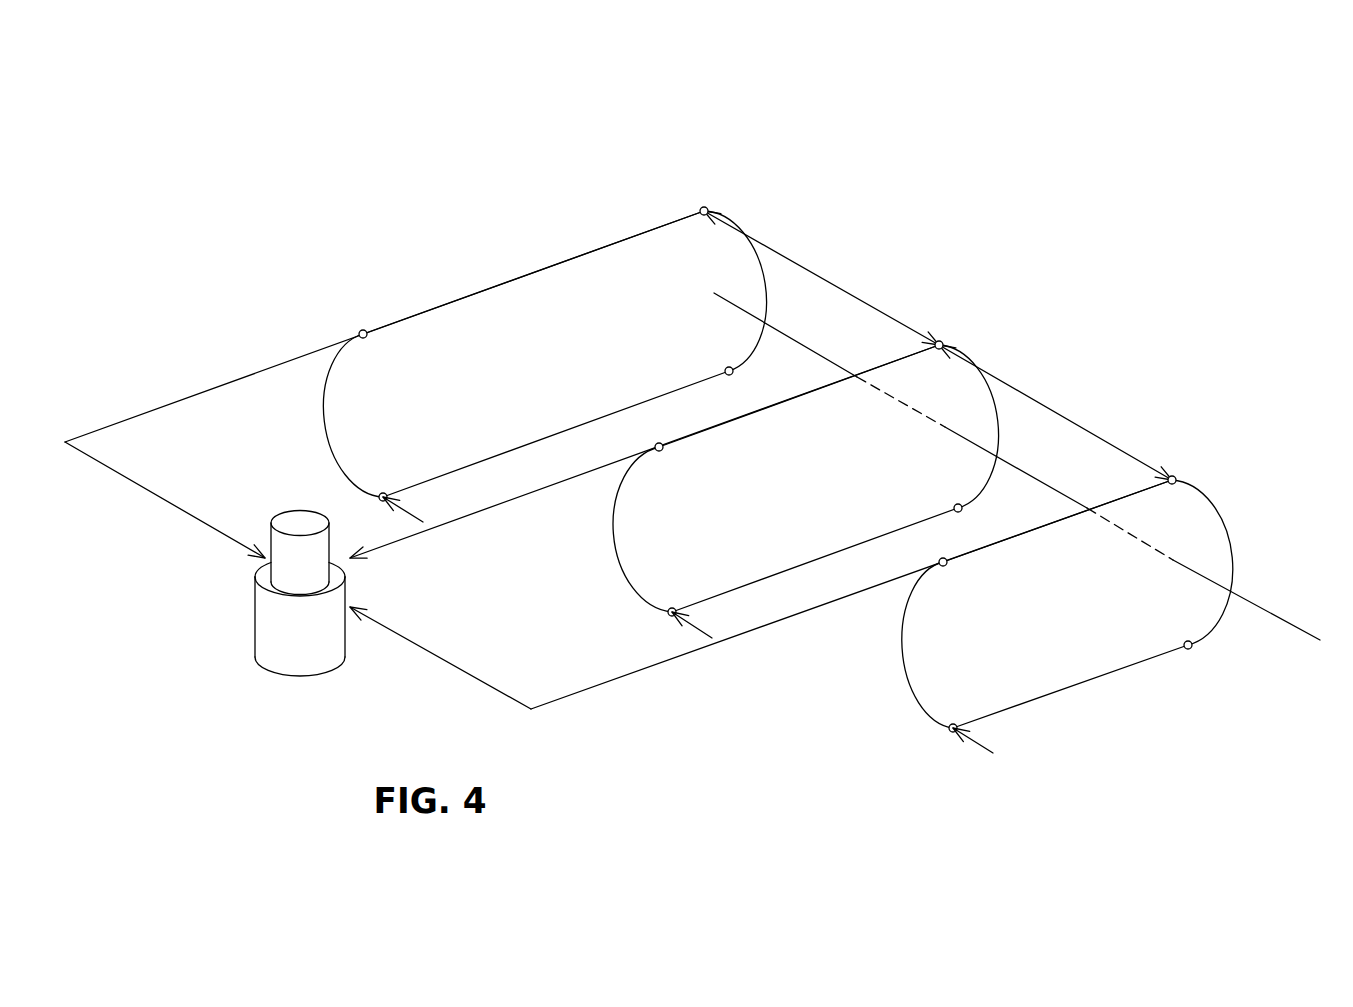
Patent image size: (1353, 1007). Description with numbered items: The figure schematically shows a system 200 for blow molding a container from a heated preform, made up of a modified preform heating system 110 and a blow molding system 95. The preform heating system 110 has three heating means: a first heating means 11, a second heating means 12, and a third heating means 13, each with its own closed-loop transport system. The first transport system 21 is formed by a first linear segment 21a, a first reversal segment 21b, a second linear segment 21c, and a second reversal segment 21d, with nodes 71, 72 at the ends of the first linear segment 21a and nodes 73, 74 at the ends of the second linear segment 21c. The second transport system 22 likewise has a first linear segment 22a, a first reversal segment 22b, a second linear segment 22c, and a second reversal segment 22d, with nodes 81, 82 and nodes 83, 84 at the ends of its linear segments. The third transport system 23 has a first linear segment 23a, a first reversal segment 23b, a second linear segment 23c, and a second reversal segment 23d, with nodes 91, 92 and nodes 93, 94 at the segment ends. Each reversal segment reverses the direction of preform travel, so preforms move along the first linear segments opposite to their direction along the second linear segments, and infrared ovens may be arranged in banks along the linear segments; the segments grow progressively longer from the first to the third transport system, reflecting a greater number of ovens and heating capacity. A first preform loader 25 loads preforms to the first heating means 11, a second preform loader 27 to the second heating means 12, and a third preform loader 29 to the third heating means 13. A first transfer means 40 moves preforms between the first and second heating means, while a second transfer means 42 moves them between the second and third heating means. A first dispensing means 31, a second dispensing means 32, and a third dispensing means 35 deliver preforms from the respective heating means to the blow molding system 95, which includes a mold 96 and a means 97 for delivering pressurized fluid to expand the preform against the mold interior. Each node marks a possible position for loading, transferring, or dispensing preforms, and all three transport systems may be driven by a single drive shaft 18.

The system for blow molding a container 200 is at (248, 147).
The third dispensing means 35 is at (618, 500).
The preform heating system 110 is at (398, 293).
The first dispensing means 31 is at (558, 711).
The second dispensing means 32 is at (510, 509).
The drive shaft 18 is at (1276, 606).
The second transfer means 42 is at (828, 274).
The first transfer means 40 is at (1060, 407).
The third heating means 13 is at (537, 314).
The third transport system 23 is at (537, 314).
The first linear segment 23a is at (559, 425).
The first reversal segment 23b is at (775, 298).
The second linear segment 23c is at (549, 273).
The second reversal segment 23d is at (316, 415).
The node 91 is at (384, 492).
The node 92 is at (728, 366).
The node 93 is at (703, 216).
The node 94 is at (365, 339).
The third preform loader 29 is at (417, 511).
The second heating means 12 is at (806, 448).
The second transport system 22 is at (806, 448).
The first linear segment 22a is at (829, 547).
The first reversal segment 22b is at (1013, 430).
The second linear segment 22c is at (791, 409).
The second reversal segment 22d is at (608, 583).
The node 81 is at (673, 607).
The node 82 is at (957, 503).
The node 83 is at (937, 350).
The node 84 is at (661, 452).
The second preform loader 27 is at (674, 632).
The first heating means 11 is at (1065, 566).
The first transport system 21 is at (1065, 566).
The first linear segment 21a is at (1082, 669).
The first reversal segment 21b is at (1249, 531).
The second linear segment 21c is at (1048, 533).
The second reversal segment 21d is at (889, 677).
The node 71 is at (954, 723).
The node 72 is at (1186, 641).
The node 73 is at (1170, 485).
The node 74 is at (945, 567).
The first preform loader 25 is at (962, 753).
The blow molding system 95 is at (245, 612).
The mold 96 is at (326, 683).
The means for delivering a pressurized fluid 97 is at (269, 512).